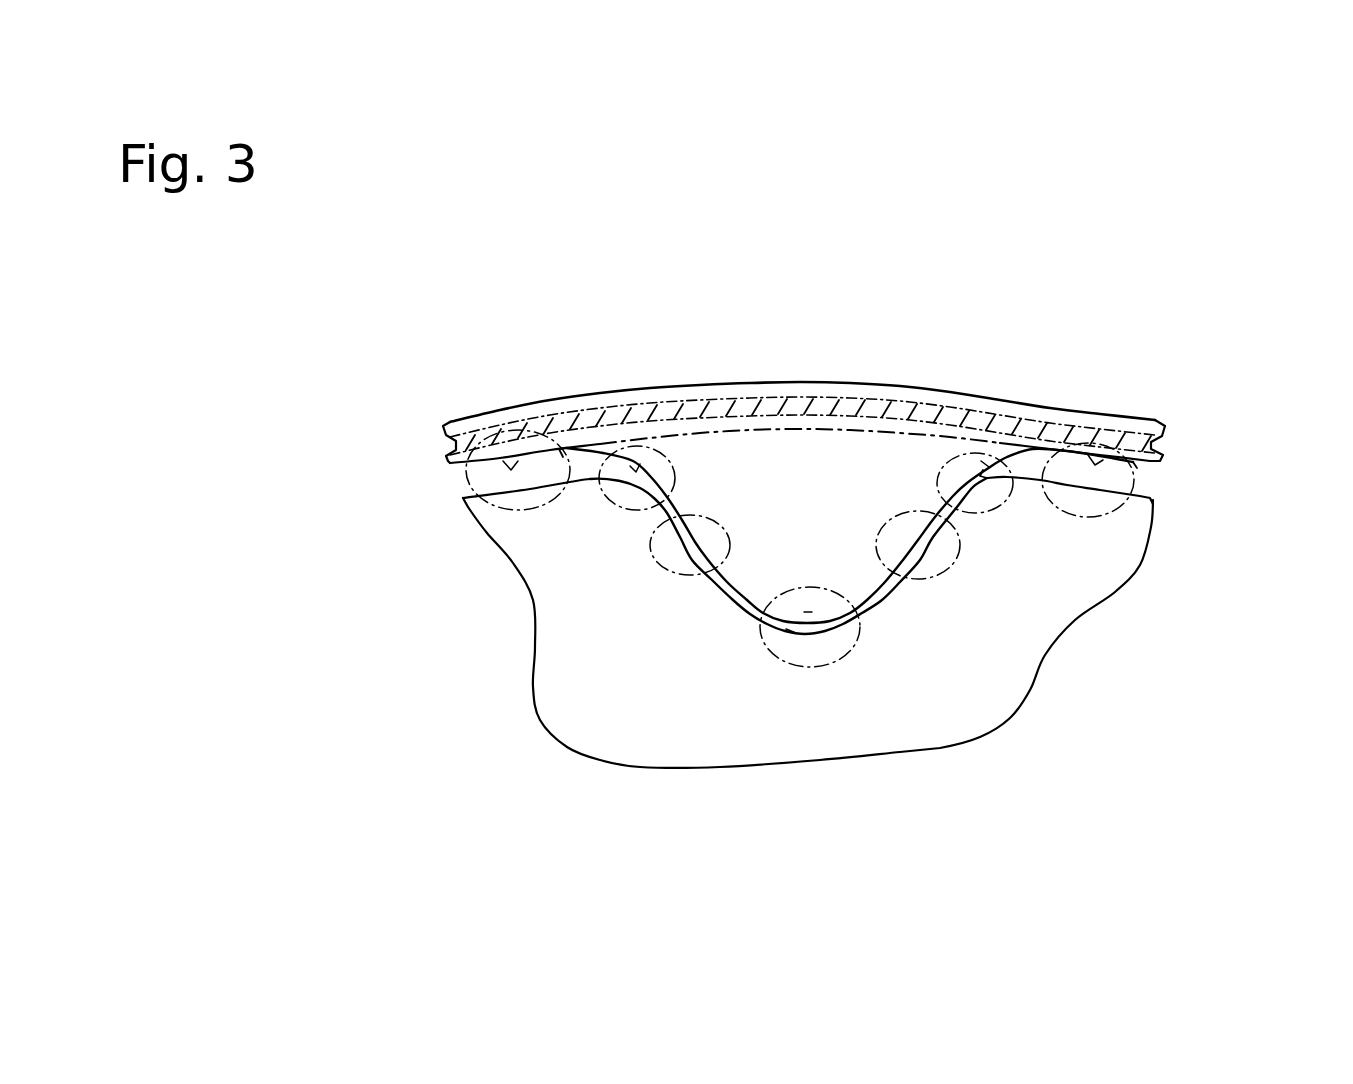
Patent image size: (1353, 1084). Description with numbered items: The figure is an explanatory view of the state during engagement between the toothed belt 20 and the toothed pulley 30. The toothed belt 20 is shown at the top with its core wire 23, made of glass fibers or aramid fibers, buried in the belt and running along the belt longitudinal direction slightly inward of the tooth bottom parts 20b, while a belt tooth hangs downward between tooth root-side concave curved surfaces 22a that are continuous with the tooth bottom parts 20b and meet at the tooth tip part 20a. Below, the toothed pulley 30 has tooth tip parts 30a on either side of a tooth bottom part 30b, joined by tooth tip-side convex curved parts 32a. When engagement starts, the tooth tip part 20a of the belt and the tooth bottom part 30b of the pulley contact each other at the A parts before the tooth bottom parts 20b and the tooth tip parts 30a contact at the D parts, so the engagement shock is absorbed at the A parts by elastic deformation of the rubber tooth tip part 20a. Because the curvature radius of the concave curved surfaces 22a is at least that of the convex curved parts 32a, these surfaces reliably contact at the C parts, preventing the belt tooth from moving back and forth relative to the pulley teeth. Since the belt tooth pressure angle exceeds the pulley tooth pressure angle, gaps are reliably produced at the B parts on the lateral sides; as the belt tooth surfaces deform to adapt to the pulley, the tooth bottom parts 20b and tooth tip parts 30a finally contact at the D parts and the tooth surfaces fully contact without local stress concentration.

The toothed belt 20 is at (453, 371).
The tooth tip parts 20a is at (808, 613).
The tooth bottom parts 20b is at (514, 460).
The tooth root-side concave curved surfaces 22a is at (634, 467).
The core wire 23 is at (898, 398).
The toothed pulley 30 is at (477, 545).
The tooth tip parts 30a is at (521, 492).
The tooth bottom parts 30b is at (790, 630).
The tooth tip-side convex curved parts 32a is at (645, 457).
The A parts A is at (832, 660).
The B parts B is at (716, 522).
The C parts C is at (660, 457).
The D parts D is at (470, 478).